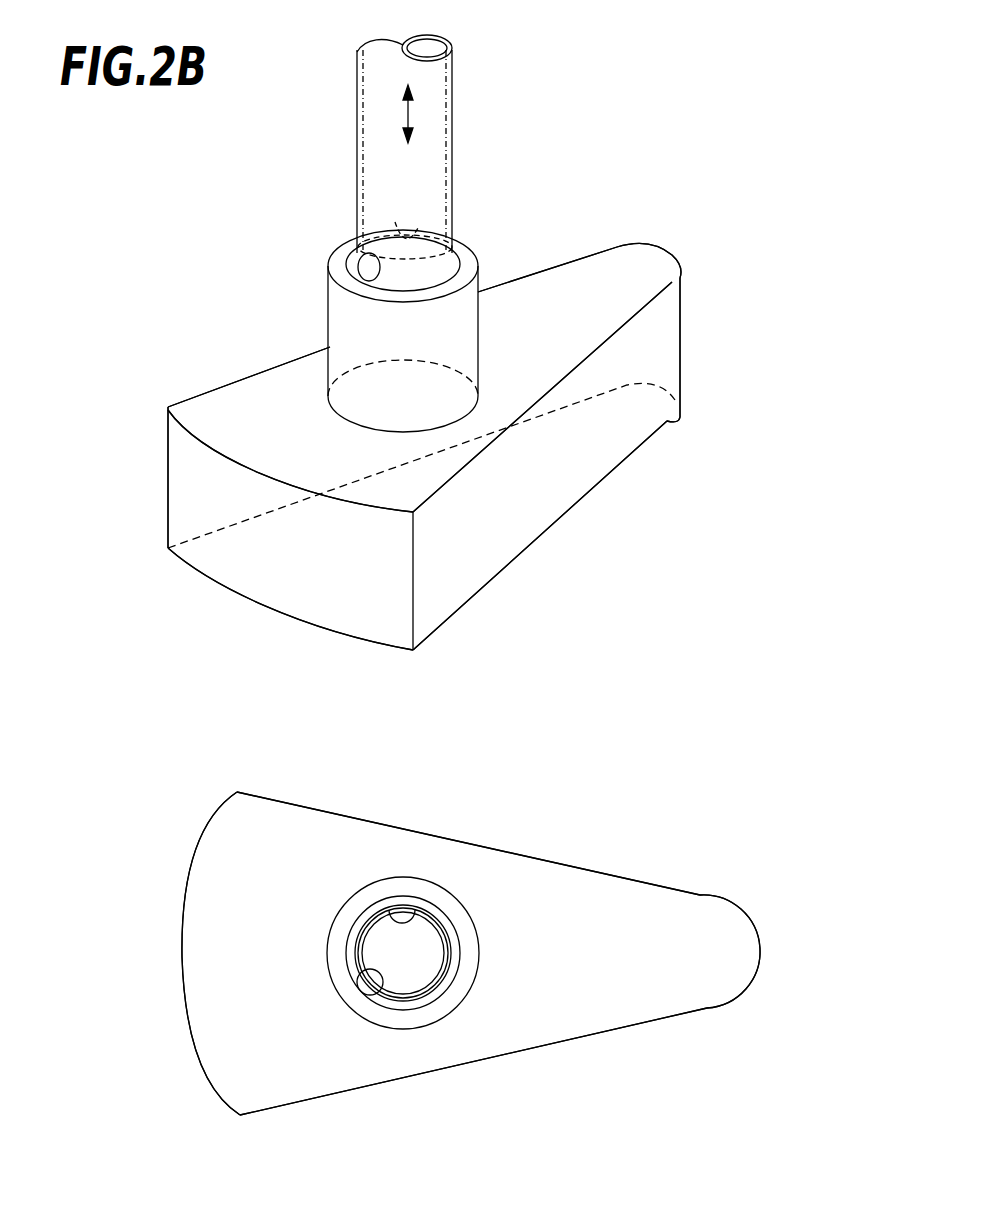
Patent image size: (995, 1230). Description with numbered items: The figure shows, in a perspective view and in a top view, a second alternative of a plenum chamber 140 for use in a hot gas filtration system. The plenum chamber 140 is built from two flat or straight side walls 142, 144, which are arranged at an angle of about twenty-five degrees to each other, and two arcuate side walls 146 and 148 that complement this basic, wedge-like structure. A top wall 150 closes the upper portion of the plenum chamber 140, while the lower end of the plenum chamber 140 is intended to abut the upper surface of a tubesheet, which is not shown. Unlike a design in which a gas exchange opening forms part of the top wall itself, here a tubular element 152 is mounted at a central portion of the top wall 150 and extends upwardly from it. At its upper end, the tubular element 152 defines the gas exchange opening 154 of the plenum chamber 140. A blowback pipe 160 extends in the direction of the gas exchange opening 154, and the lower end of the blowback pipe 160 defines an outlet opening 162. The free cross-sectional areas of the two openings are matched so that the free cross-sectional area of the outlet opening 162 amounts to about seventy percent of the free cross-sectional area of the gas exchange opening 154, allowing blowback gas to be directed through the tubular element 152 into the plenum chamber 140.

The plenum chamber 140 is at (632, 477).
The straight side wall 142 is at (517, 517).
The straight side wall 144 is at (267, 420).
The arcuate side wall 146 is at (233, 572).
The arcuate side wall 148 is at (682, 292).
The top wall 150 is at (290, 383).
The tubular element 152 is at (450, 332).
The gas exchange opening 154 is at (347, 255).
The blowback pipe 160 is at (452, 115).
The outlet opening 162 is at (400, 222).